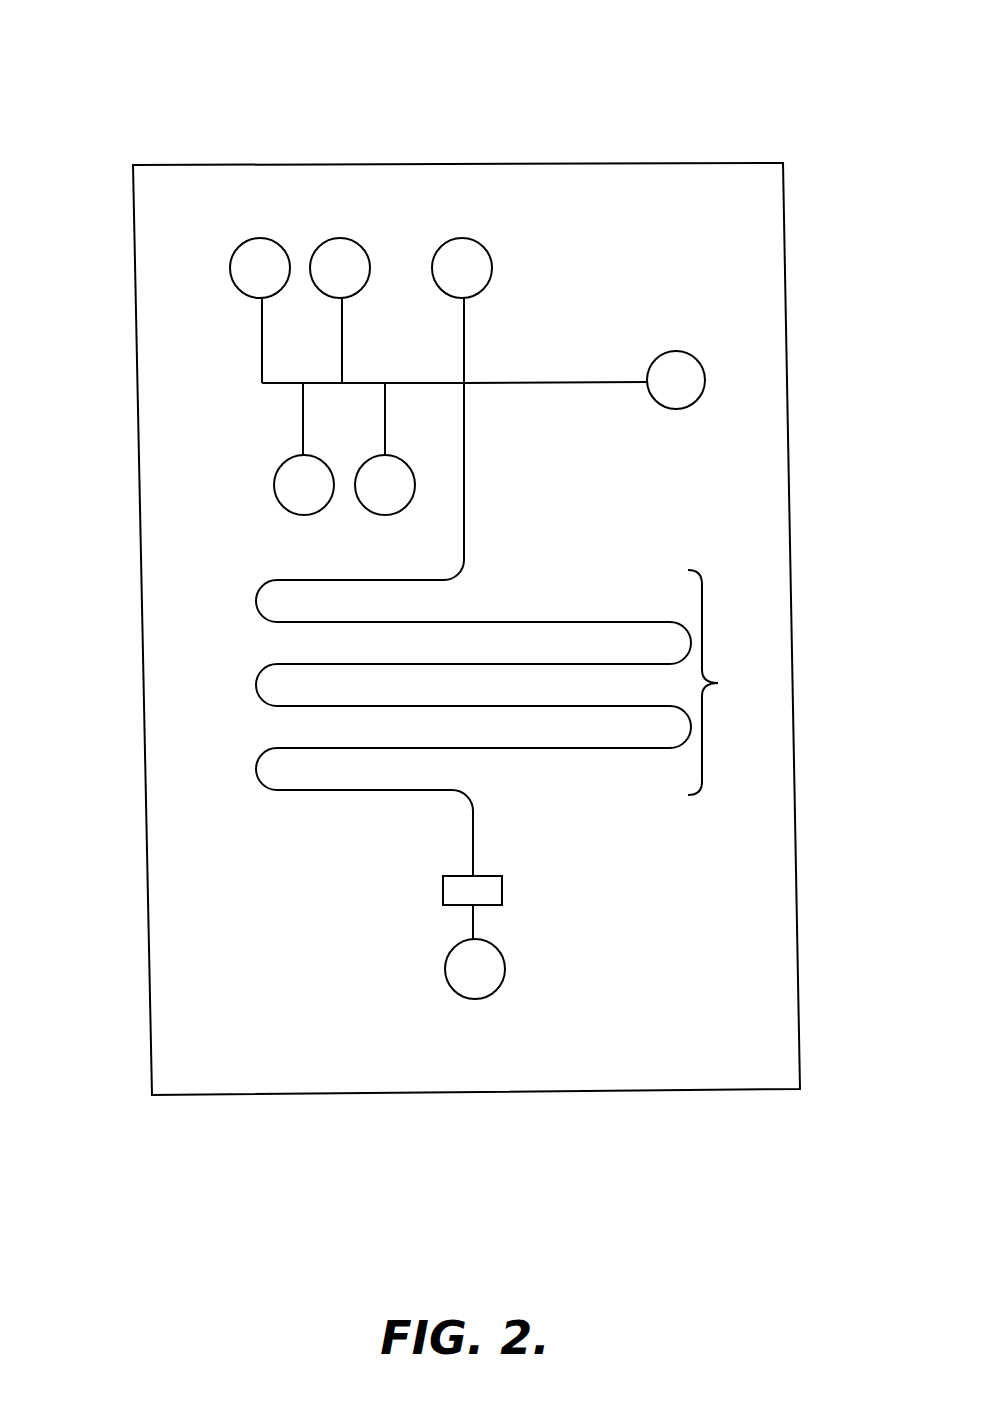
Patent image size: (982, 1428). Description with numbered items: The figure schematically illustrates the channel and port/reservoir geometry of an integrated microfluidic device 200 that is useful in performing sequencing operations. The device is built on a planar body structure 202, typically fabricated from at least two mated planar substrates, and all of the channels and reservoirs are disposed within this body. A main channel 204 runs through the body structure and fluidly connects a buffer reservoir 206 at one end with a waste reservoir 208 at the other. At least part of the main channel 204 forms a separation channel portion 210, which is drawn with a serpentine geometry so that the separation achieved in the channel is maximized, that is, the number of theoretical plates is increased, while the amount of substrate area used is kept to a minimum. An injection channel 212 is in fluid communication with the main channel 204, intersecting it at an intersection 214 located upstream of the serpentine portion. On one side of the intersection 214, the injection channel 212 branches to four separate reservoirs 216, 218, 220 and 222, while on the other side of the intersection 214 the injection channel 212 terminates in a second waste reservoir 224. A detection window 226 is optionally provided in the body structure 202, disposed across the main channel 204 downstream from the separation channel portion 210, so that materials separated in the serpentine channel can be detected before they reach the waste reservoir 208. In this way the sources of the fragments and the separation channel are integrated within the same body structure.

The microfluidic device 200 is at (82, 50).
The planar body structure 202 is at (752, 171).
The main channel 204 is at (481, 438).
The buffer reservoir 206 is at (472, 246).
The waste reservoir 208 is at (487, 978).
The separation channel portion 210 is at (512, 754).
The injection channel 212 is at (547, 370).
The intersection 214 is at (476, 371).
The reservoir 216 is at (234, 247).
The reservoir 218 is at (330, 245).
The reservoir 220 is at (284, 474).
The reservoir 222 is at (364, 492).
The waste reservoir 224 is at (697, 371).
The detection window 226 is at (519, 879).